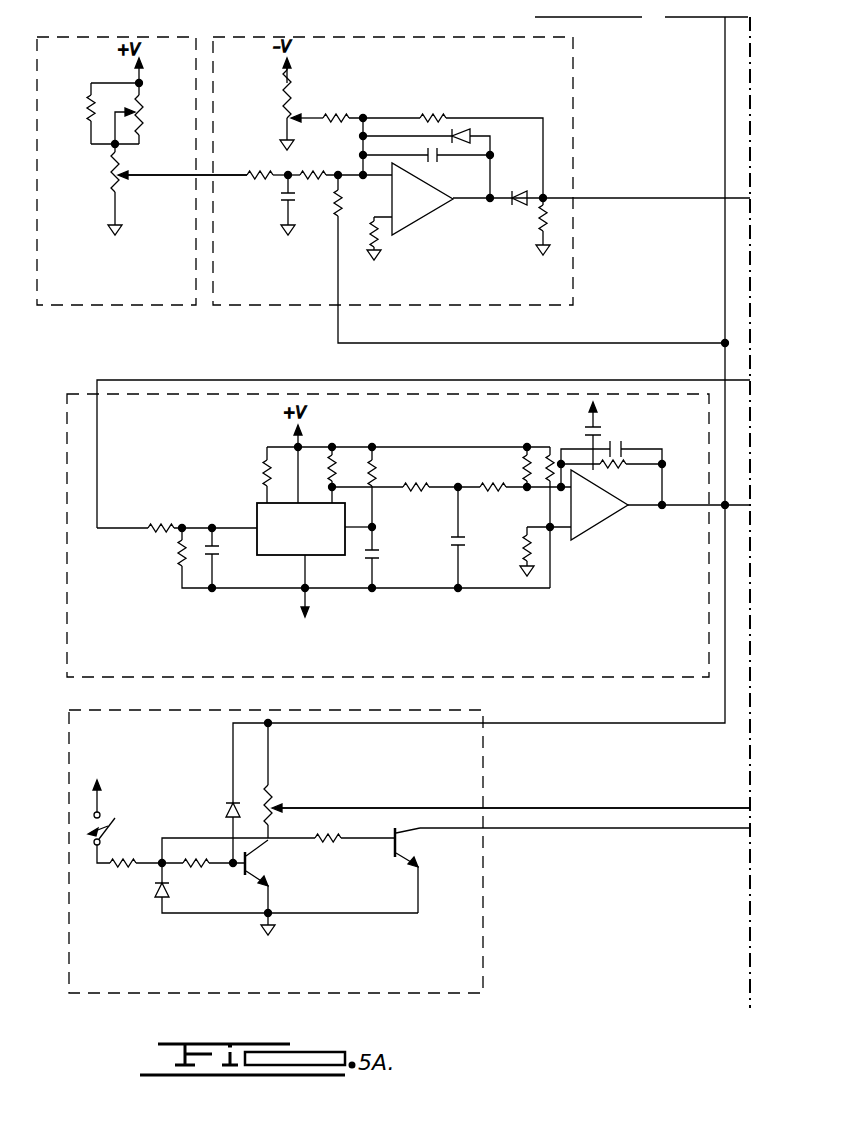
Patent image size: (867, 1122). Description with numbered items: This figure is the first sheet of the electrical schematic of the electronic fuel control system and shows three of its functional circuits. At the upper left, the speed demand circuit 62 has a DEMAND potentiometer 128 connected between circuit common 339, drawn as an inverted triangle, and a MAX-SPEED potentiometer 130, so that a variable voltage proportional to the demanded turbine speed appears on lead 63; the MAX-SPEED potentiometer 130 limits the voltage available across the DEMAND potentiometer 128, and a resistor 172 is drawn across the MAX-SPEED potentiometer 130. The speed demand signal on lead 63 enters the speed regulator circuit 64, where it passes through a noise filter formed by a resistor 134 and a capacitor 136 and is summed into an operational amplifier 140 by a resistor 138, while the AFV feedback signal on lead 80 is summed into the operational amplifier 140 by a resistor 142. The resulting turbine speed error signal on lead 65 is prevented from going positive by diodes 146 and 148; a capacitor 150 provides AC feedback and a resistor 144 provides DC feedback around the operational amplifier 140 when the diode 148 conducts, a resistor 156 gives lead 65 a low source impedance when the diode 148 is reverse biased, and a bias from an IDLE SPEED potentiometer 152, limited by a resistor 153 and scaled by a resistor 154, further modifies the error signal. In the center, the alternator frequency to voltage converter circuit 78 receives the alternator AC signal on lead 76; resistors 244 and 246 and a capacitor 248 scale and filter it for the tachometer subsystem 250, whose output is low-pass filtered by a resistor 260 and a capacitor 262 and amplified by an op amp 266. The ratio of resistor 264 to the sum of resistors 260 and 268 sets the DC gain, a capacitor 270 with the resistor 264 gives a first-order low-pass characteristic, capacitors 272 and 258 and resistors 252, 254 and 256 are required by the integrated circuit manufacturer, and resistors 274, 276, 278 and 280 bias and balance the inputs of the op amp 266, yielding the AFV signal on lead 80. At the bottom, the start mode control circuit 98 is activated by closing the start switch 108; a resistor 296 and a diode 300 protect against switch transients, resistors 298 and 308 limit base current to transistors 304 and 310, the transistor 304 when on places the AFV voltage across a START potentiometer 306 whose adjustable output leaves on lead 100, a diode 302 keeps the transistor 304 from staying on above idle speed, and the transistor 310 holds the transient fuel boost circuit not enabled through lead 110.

The speed demand circuit 62 is at (150, 305).
The resistor 172 is at (86, 112).
The MAX-SPEED potentiometer 130 is at (143, 136).
The DEMAND potentiometer 128 is at (120, 190).
The circuit common 339 is at (122, 231).
The speed regulator circuit 64 is at (235, 305).
The IDLE SPEED potentiometer 152 is at (299, 122).
The resistor 153 is at (297, 76).
The lead 63 is at (213, 178).
The resistor 154 is at (336, 116).
The resistor 144 is at (430, 114).
The diode 146 is at (462, 128).
The capacitor 150 is at (420, 156).
The resistor 134 is at (257, 180).
The capacitor 136 is at (277, 202).
The resistor 138 is at (347, 160).
The resistor 142 is at (344, 214).
The operational amplifier 140 is at (423, 227).
The diode 148 is at (522, 208).
The resistor 156 is at (548, 218).
The lead 65 is at (663, 199).
The lead 76 is at (687, 378).
The alternator frequency to voltage converter circuit 78 is at (622, 677).
The resistor 244 is at (158, 522).
The resistor 246 is at (178, 556).
The capacitor 248 is at (220, 556).
The tachometer subsystem 250 is at (256, 508).
The resistor 252 is at (262, 472).
The resistor 254 is at (338, 445).
The resistor 256 is at (378, 470).
The capacitor 258 is at (380, 558).
The resistor 260 is at (408, 492).
The capacitor 262 is at (450, 543).
The resistor 264 is at (610, 472).
The op amp 266 is at (602, 526).
The resistor 268 is at (486, 492).
The capacitor 270 is at (625, 450).
The capacitor 272 is at (602, 432).
The resistor 274 is at (522, 470).
The resistor 276 is at (546, 452).
The resistor 278 is at (520, 548).
The resistor 280 is at (554, 546).
The lead 80 is at (664, 508).
The start mode control circuit 98 is at (405, 993).
The start switch 108 is at (115, 820).
The resistor 296 is at (120, 868).
The resistor 298 is at (200, 868).
The diode 300 is at (155, 896).
The diode 302 is at (226, 808).
The transistor 304 is at (255, 875).
The START potentiometer 306 is at (275, 816).
The resistor 308 is at (322, 843).
The transistor 310 is at (402, 870).
The lead 100 is at (680, 808).
The lead 110 is at (675, 828).